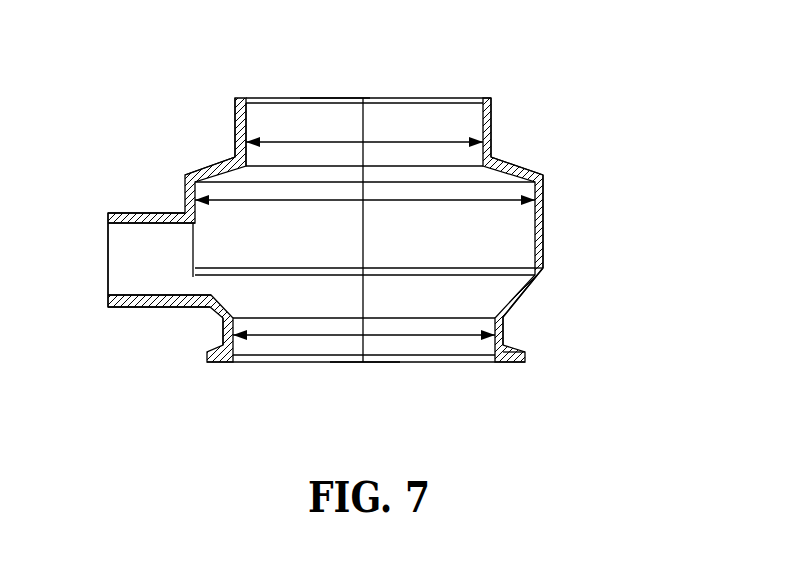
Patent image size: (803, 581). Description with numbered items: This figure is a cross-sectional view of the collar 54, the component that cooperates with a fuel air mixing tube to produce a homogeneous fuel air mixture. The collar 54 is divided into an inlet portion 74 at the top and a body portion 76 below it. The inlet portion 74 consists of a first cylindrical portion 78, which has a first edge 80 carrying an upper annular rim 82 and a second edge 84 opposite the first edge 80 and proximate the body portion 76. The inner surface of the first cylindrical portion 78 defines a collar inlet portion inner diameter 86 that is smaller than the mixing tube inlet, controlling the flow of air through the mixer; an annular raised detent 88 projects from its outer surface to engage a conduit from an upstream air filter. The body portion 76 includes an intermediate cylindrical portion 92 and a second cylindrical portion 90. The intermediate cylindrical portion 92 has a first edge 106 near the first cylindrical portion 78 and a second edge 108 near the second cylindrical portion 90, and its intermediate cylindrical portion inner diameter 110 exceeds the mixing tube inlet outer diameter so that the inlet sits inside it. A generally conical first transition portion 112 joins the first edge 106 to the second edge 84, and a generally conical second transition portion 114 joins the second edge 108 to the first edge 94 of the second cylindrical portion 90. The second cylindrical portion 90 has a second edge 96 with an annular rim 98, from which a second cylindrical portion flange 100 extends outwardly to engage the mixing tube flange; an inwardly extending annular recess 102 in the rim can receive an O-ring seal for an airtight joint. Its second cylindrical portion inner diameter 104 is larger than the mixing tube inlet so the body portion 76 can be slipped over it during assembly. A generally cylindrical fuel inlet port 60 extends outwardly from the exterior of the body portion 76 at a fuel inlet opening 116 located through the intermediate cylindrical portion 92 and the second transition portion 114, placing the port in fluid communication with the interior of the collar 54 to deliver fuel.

The collar 54 is at (158, 50).
The fuel inlet port 60 is at (118, 214).
The inlet portion 74 is at (645, 70).
The body portion 76 is at (645, 173).
The first cylindrical portion 78 is at (262, 113).
The first edge 80 is at (489, 98).
The upper annular rim 82 is at (335, 98).
The second edge 84 is at (238, 150).
The collar inlet portion inner diameter 86 is at (383, 142).
The annular raised detent 88 is at (492, 118).
The second cylindrical portion 90 is at (237, 343).
The intermediate cylindrical portion 92 is at (523, 223).
The first edge 94 is at (503, 322).
The second edge 96 is at (368, 364).
The annular rim 98 is at (502, 360).
The second cylindrical portion flange 100 is at (513, 357).
The annular recess 102 is at (225, 358).
The second cylindrical portion inner diameter 104 is at (380, 335).
The first edge 106 is at (232, 164).
The second edge 108 is at (538, 275).
The intermediate cylindrical portion inner diameter 110 is at (380, 202).
The first transition portion 112 is at (523, 168).
The second transition portion 114 is at (520, 295).
The fuel inlet opening 116 is at (190, 252).